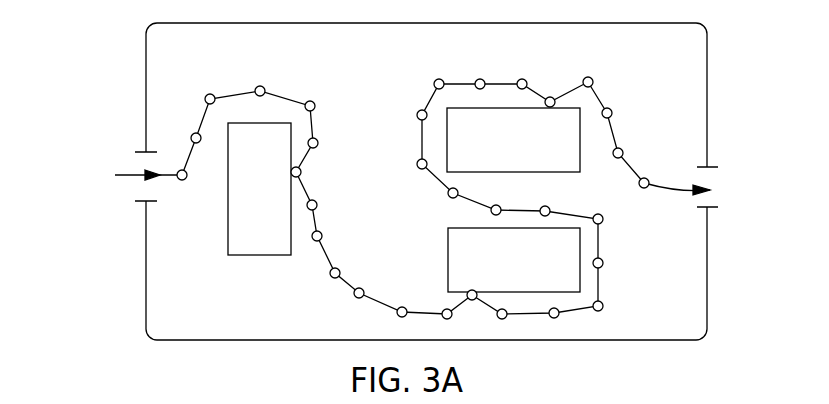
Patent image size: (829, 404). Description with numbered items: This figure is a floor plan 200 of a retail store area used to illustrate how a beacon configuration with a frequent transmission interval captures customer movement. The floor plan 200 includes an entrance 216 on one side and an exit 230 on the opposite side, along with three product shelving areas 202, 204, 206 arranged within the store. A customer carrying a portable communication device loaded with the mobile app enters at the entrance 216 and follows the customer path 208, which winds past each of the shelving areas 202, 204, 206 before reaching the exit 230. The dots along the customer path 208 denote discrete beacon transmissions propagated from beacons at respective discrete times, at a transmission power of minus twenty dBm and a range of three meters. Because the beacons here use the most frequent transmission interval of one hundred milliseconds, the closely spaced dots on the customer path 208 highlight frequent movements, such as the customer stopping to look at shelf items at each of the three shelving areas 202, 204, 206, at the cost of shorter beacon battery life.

The floor plan 200 is at (146, 42).
The product shelving area 202 is at (228, 238).
The product shelving area 204 is at (447, 127).
The product shelving area 206 is at (448, 260).
The customer path 208 is at (328, 254).
The entrance 216 is at (145, 192).
The exit 230 is at (707, 198).